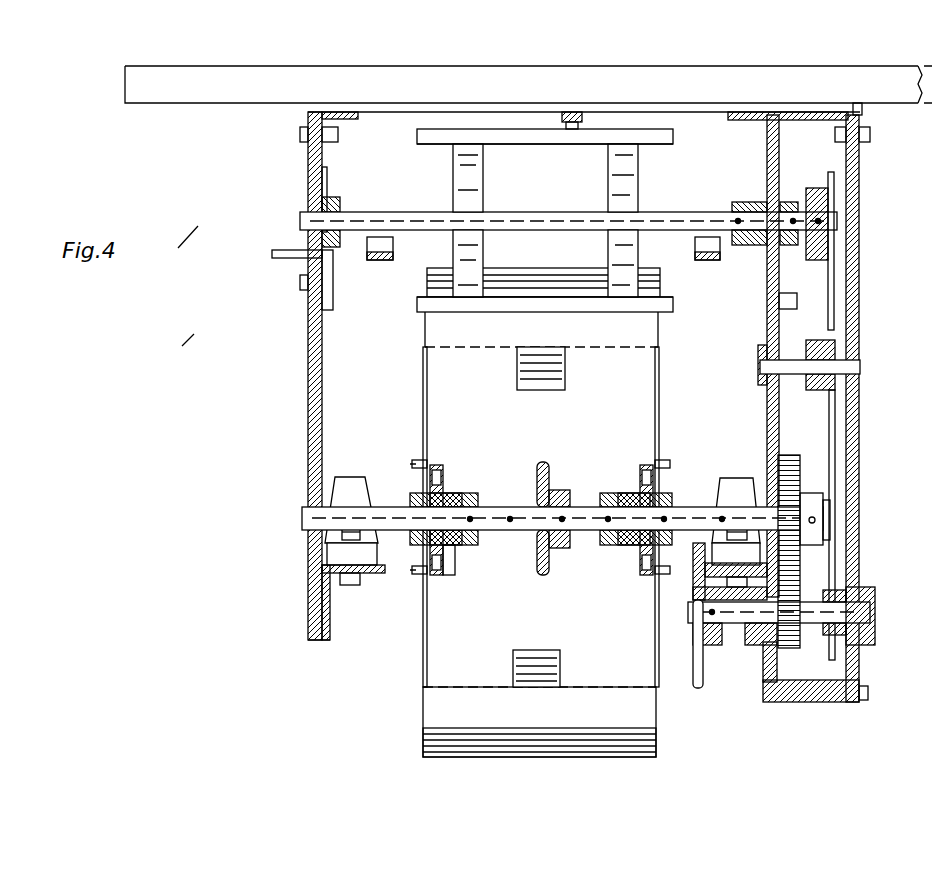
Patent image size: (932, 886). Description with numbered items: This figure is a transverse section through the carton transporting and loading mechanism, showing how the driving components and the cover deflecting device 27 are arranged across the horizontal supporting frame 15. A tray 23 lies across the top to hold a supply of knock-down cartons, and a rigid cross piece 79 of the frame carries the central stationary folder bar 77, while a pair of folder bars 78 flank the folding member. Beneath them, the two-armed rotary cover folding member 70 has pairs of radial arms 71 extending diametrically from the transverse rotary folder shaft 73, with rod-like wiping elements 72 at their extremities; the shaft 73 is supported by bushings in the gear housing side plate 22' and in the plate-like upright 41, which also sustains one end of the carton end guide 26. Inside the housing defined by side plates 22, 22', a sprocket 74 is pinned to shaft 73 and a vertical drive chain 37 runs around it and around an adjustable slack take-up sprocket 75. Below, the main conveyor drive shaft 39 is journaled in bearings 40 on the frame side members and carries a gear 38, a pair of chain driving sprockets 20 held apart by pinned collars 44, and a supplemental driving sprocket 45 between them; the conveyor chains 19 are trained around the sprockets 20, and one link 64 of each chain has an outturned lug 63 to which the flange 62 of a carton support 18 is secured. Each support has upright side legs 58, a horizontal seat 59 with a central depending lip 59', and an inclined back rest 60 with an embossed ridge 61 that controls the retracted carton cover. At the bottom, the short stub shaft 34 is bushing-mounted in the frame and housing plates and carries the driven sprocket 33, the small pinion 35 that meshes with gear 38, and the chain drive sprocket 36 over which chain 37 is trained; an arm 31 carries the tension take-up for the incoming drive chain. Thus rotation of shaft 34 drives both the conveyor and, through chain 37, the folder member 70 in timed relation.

The horizontal supporting frame 15 is at (315, 660).
The carton support 18 is at (660, 360).
The conveyor chain 19 is at (441, 480).
The chain driving sprocket 20 is at (456, 545).
The side plate 22 is at (834, 402).
The side plate 22' is at (757, 398).
The tray 23 is at (233, 92).
The carton end guide 26 is at (334, 285).
The cover deflecting device 27 is at (413, 171).
The arm 31 is at (735, 634).
The sprocket 33 is at (692, 666).
The stub shaft 34 is at (740, 642).
The pinion 35 is at (787, 650).
The chain drive sprocket 36 is at (832, 636).
The drive chain 37 is at (835, 455).
The gear 38 is at (802, 535).
The chain conveyor drive shaft 39 is at (683, 507).
The bearing 40 is at (350, 488).
The plate-like upright 41 is at (322, 370).
The pinned collar 44 is at (480, 493).
The supplemental driving sprocket 45 is at (562, 493).
The side leg 58 is at (423, 385).
The horizontal seat 59 is at (540, 521).
The lip 59' is at (541, 517).
The back rest 60 is at (660, 322).
The ridge 61 is at (542, 285).
The flange 62 is at (415, 458).
The outturned lug 63 is at (412, 466).
The chain link 64 is at (445, 572).
The rotary cover folding member 70 is at (673, 136).
The radial arm 71 is at (639, 170).
The wiping element 72 is at (553, 142).
The rotary folder shaft 73 is at (550, 212).
The sprocket 74 is at (830, 243).
The slack take-up sprocket 75 is at (860, 340).
The folder bar 77 is at (572, 112).
The folder bar 78 is at (380, 260).
The cross piece 79 is at (691, 112).